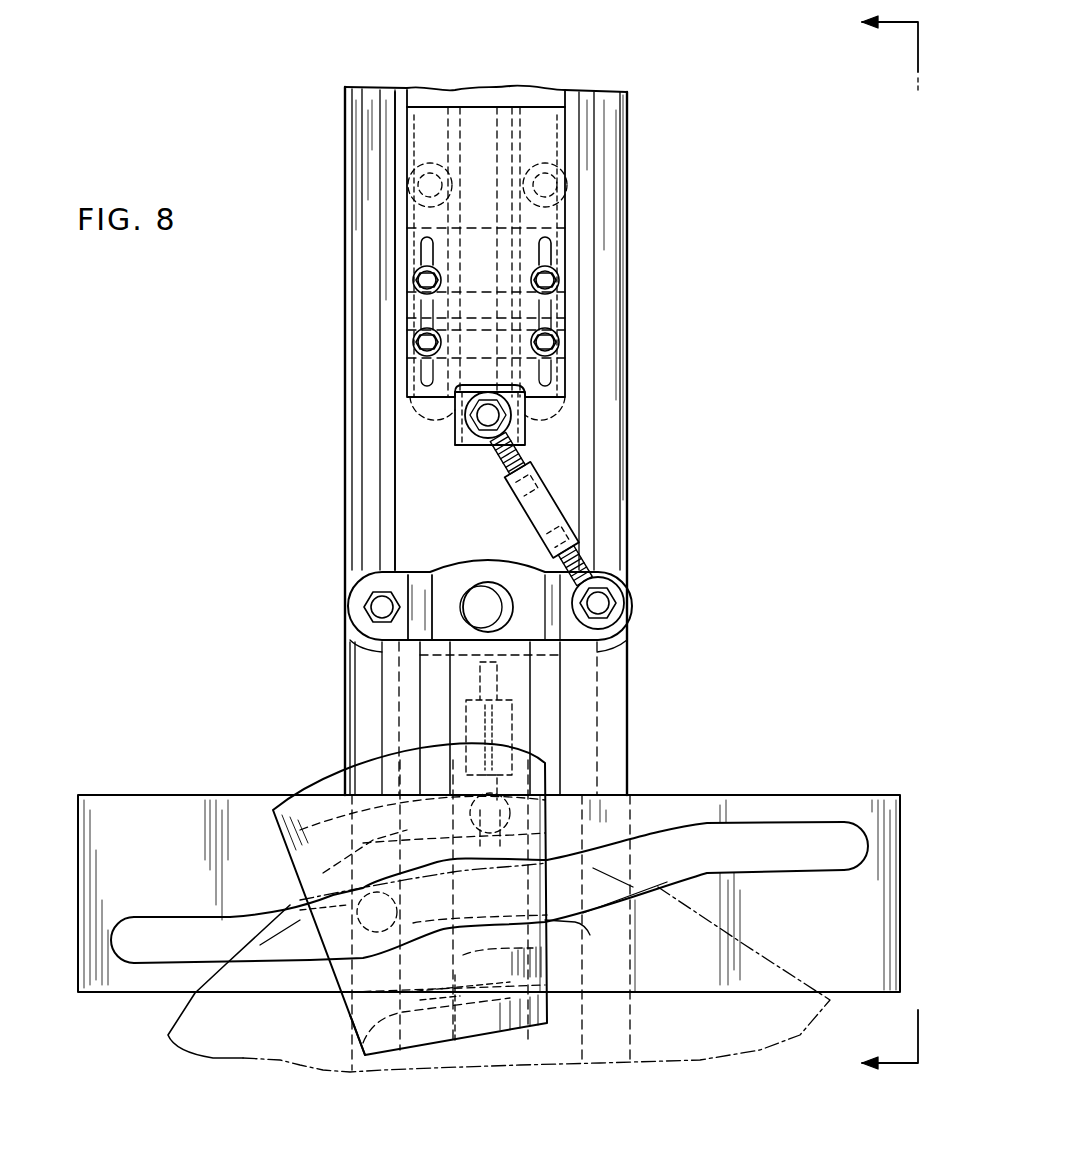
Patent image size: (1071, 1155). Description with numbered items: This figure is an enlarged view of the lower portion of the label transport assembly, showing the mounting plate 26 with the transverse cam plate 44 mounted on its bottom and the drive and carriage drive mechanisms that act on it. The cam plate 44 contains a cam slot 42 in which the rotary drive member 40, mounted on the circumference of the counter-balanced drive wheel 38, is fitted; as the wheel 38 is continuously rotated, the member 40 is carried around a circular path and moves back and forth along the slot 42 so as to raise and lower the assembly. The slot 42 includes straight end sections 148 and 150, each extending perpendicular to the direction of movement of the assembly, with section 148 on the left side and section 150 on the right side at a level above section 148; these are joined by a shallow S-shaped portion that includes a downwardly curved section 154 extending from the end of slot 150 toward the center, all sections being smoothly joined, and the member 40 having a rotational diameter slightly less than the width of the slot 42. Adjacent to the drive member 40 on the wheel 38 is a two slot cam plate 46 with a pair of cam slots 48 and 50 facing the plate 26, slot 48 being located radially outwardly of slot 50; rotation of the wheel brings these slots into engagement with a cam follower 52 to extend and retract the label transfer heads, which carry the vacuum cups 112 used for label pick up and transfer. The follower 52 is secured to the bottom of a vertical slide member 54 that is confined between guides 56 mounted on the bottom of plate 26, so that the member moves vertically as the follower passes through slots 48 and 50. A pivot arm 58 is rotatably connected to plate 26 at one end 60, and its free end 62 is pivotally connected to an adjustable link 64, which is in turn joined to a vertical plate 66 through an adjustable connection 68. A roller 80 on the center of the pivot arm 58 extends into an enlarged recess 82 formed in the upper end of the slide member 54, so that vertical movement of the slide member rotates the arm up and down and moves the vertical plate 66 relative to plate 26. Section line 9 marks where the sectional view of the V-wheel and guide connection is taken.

The section line 9 is at (875, 545).
The mounting plate 26 is at (618, 390).
The counter-balanced drive wheel 38 is at (183, 1023).
The rotary drive member 40 is at (428, 871).
The cam slot 42 is at (782, 820).
The transverse cam plate 44 is at (858, 975).
The two slot cam plate 46 is at (347, 1012).
The cam slot 48 is at (350, 790).
The cam slot 50 is at (434, 1006).
The cam follower 52 is at (610, 815).
The vertical slide member 54 is at (512, 575).
The guides 56 is at (400, 667).
The pivot arm 58 is at (418, 572).
The end 60 is at (355, 598).
The free end 62 is at (618, 576).
The adjustable link 64 is at (557, 500).
The vertical plate 66 is at (562, 127).
The adjustable connection 68 is at (565, 350).
The roller 80 is at (490, 605).
The enlarged recess 82 is at (462, 606).
The vacuum cups 112 is at (458, 986).
The straight end section 148 is at (172, 928).
The straight end section 150 is at (808, 866).
The downwardly curved section 154 is at (606, 918).